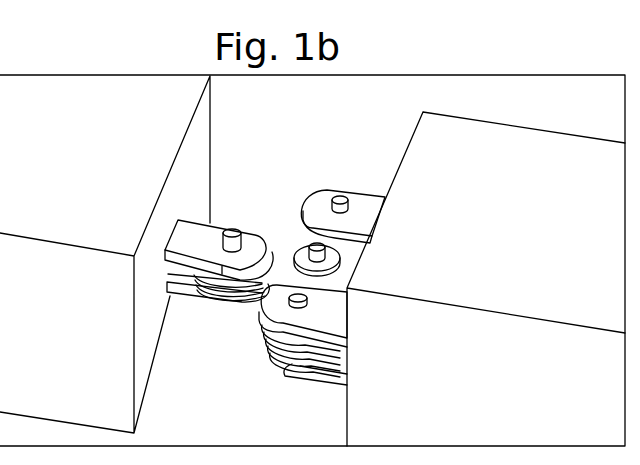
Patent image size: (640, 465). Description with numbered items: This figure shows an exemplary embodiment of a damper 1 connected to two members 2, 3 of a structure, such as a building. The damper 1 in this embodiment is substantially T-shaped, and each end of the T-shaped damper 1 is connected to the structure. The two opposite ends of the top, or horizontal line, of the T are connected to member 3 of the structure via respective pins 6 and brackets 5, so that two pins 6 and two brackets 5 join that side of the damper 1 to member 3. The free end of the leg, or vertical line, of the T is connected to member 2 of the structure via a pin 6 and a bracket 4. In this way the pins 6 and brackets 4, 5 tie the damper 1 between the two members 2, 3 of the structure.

The damper 1 is at (290, 172).
The member 2 is at (73, 193).
The member 3 is at (474, 396).
The bracket 4 is at (192, 292).
The bracket 5 is at (370, 203).
The pin 6 is at (237, 229).